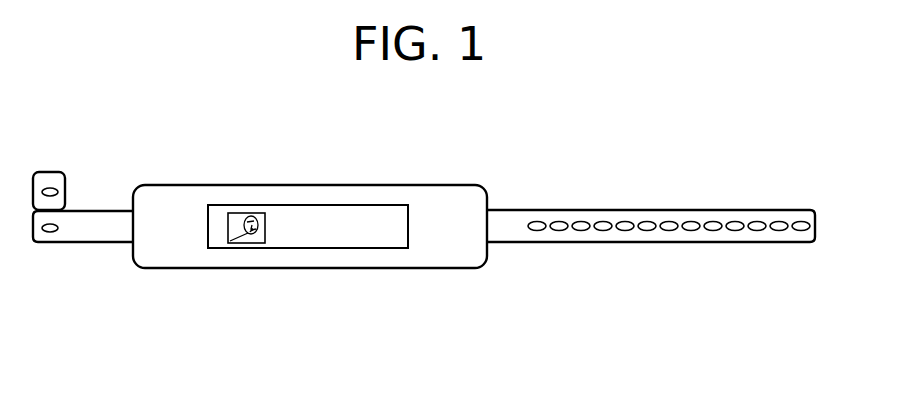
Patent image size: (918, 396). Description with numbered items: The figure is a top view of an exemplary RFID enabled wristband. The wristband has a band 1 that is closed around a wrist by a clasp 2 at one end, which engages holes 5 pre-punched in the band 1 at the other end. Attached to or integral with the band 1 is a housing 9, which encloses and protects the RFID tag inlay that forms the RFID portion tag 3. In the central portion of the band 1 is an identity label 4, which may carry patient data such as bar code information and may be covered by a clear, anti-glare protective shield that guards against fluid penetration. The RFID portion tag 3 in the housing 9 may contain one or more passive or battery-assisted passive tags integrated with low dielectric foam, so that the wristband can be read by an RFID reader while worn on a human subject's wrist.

The band 1 is at (95, 210).
The clasp 2 is at (50, 172).
The RFID portion tag 3 is at (345, 268).
The identity label 4 is at (220, 205).
The holes 5 is at (733, 221).
The housing 9 is at (237, 271).